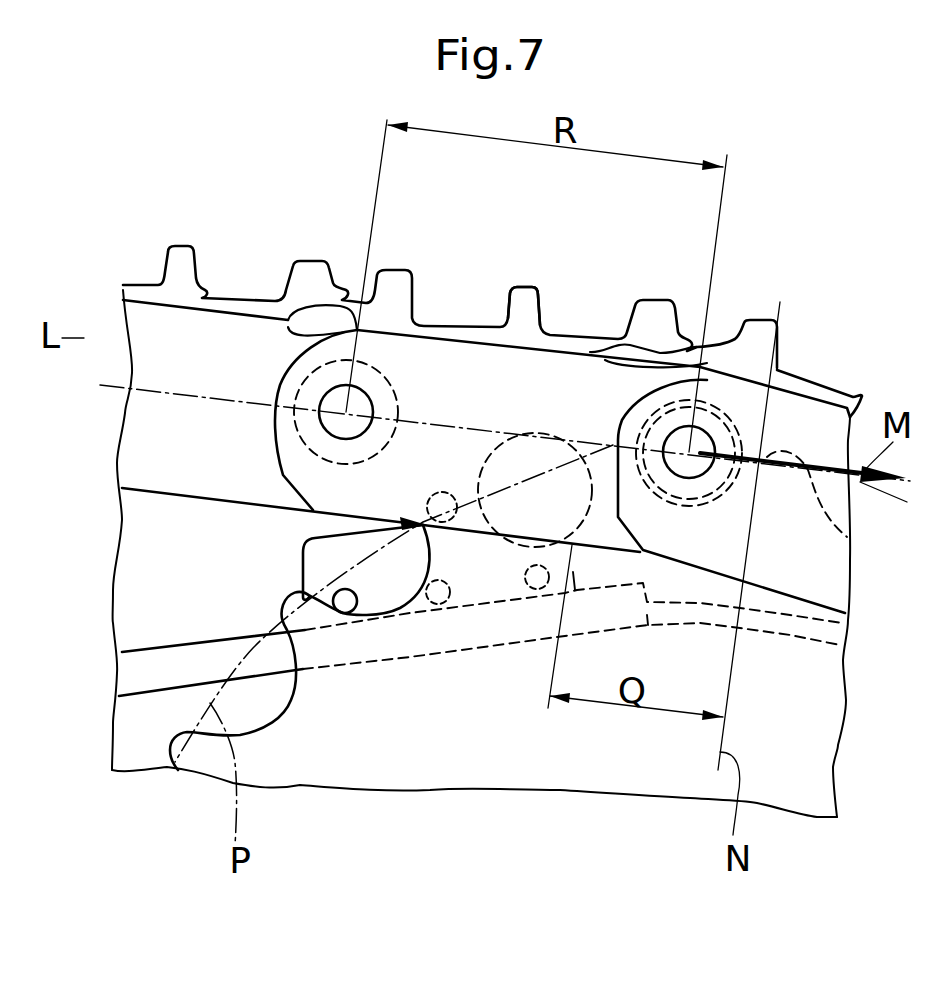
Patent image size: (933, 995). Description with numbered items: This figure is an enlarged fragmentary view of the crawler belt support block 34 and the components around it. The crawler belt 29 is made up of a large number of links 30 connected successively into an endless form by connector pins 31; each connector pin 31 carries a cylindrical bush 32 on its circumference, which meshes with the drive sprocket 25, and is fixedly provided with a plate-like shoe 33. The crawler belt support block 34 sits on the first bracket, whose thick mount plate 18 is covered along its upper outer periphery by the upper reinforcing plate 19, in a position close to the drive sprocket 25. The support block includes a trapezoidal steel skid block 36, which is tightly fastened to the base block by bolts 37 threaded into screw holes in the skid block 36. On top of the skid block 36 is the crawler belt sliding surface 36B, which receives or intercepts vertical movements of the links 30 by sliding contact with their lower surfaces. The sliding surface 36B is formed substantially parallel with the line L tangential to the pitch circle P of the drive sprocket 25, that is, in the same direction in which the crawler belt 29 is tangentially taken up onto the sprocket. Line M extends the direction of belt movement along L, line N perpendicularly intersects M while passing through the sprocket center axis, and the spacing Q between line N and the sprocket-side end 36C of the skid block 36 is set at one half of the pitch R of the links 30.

The mount plate 18 is at (138, 757).
The upper reinforcing plate 19 is at (170, 662).
The drive sprocket 25 is at (414, 778).
The crawler belt 29 is at (237, 292).
The links 30 is at (607, 377).
The connector pins 31 is at (335, 398).
The cylindrical bush 32 is at (380, 447).
The shoe 33 is at (517, 290).
The crawler belt support block 34 is at (301, 581).
The skid block 36 is at (313, 558).
The crawler belt sliding surface 36B is at (460, 518).
The end of the skid block 36C is at (573, 573).
The bolts 37 is at (345, 615).